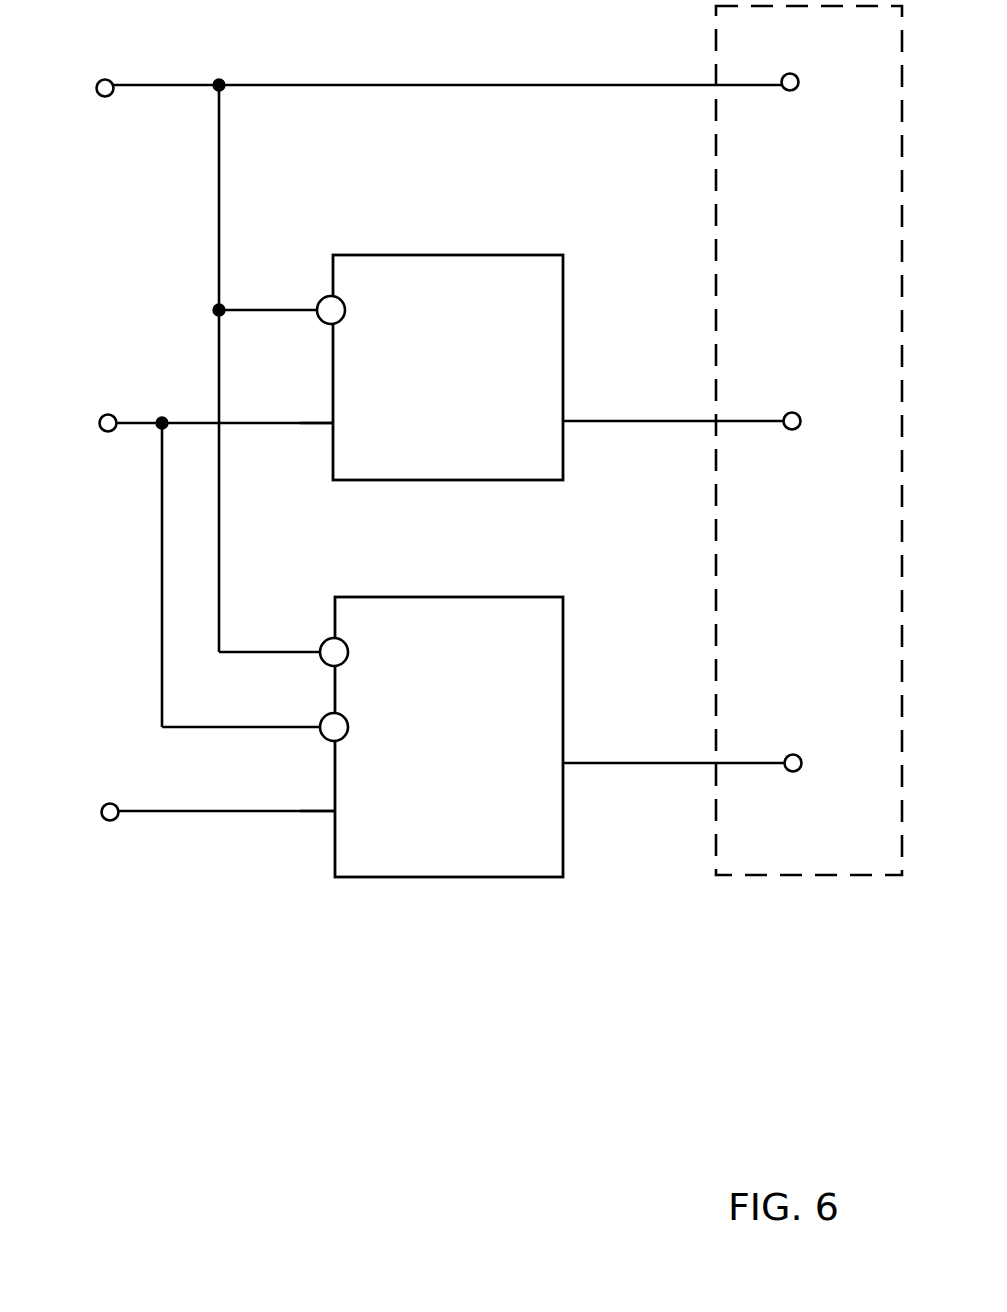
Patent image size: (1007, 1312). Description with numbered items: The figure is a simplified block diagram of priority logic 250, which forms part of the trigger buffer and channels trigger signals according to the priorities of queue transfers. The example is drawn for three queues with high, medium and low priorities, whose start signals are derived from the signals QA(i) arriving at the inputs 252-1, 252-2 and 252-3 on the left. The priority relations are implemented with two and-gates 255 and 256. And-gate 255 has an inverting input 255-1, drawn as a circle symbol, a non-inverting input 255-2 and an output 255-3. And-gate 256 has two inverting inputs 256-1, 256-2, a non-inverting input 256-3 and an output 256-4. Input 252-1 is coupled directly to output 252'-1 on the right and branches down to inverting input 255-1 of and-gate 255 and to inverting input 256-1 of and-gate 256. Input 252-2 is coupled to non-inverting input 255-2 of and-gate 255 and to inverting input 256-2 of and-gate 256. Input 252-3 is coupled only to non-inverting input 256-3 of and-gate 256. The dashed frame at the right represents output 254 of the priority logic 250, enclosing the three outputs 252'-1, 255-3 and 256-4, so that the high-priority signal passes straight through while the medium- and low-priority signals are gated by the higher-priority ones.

The priority logic 250 is at (472, 614).
The input 252-1 is at (99, 80).
The input 252-2 is at (102, 415).
The input 252-3 is at (103, 804).
The output 252'-1 is at (833, 70).
The output 254 is at (809, 440).
The and-gate 255 is at (410, 367).
The inverting input 255-1 is at (316, 303).
The non-inverting input 255-2 is at (332, 422).
The output 255-3 is at (801, 414).
The and-gate 256 is at (411, 737).
The inverting input 256-1 is at (318, 645).
The inverting input 256-2 is at (318, 720).
The non-inverting input 256-3 is at (334, 809).
The output 256-4 is at (802, 756).